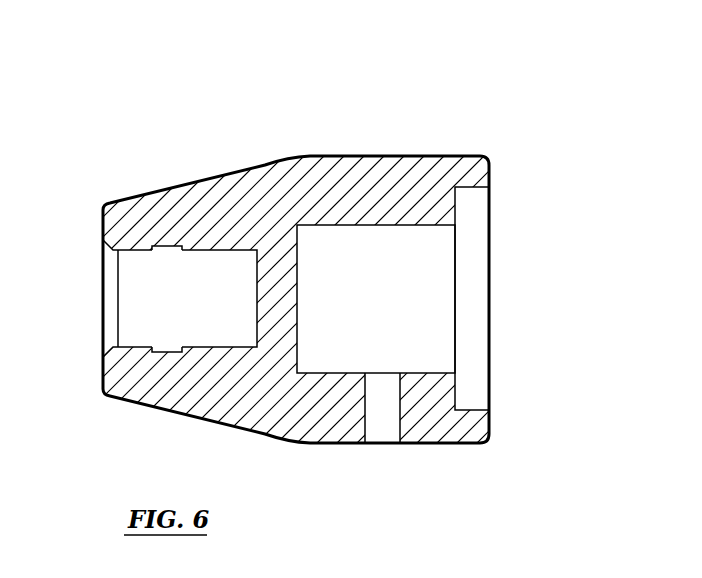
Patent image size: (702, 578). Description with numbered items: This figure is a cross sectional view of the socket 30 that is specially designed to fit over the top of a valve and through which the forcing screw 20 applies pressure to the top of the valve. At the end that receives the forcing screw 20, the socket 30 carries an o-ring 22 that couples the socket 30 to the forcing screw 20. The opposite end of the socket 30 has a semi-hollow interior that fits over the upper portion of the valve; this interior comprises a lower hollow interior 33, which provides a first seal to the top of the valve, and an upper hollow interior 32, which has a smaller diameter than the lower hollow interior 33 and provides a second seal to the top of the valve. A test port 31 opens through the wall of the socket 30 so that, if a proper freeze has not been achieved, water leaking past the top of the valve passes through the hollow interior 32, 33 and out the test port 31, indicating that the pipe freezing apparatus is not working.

The socket 30 is at (118, 111).
The forcing screw 20 is at (130, 265).
The o-ring 22 is at (157, 338).
The test port 31 is at (387, 428).
The upper hollow interior 32 is at (443, 360).
The lower hollow interior 33 is at (465, 203).